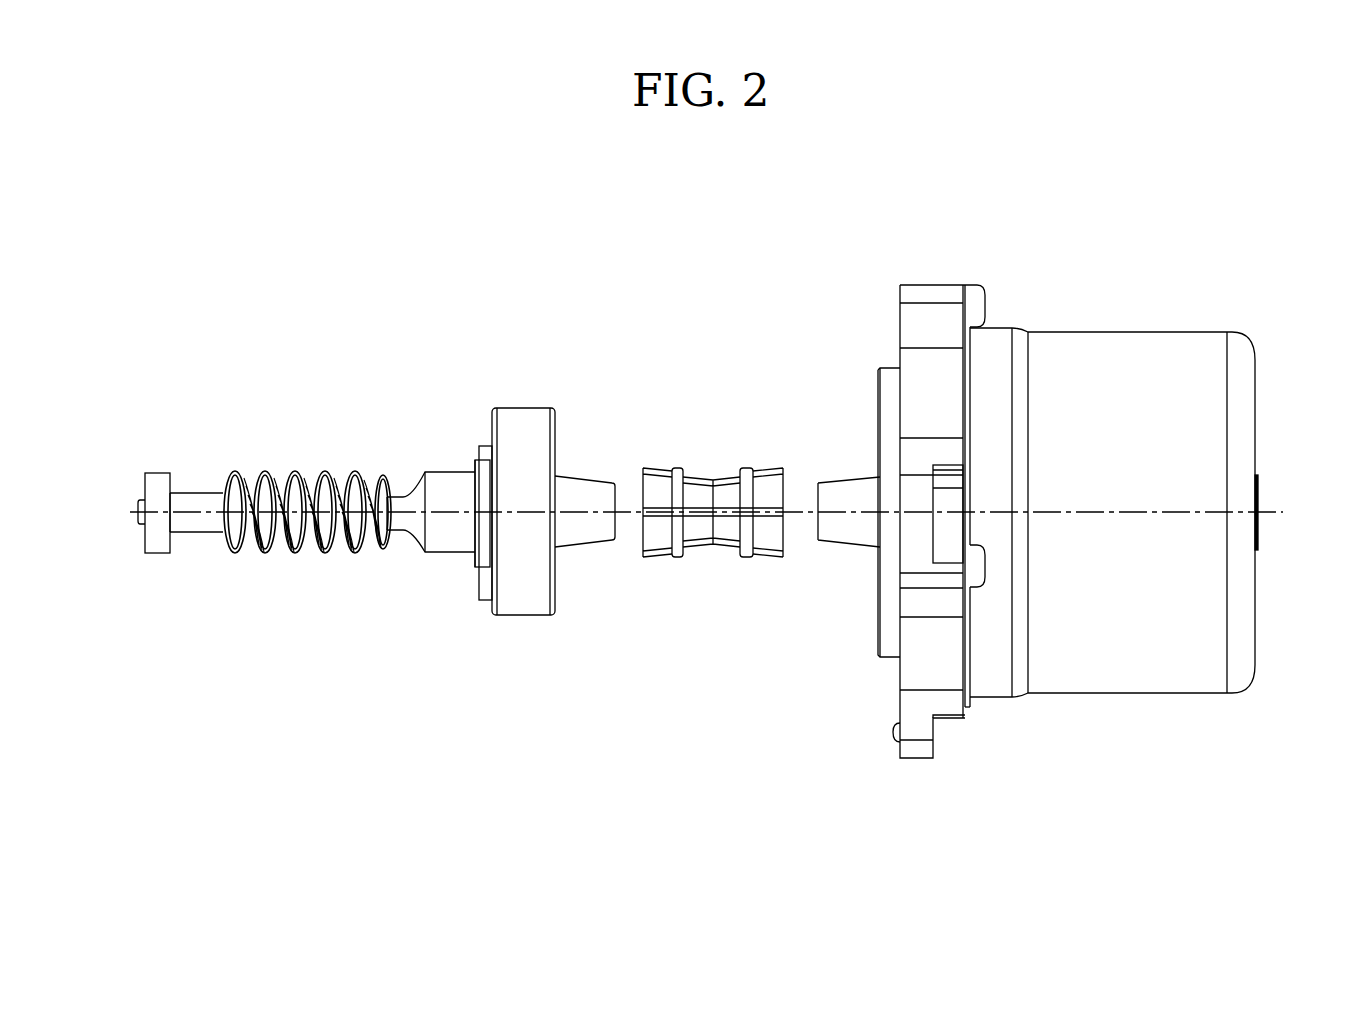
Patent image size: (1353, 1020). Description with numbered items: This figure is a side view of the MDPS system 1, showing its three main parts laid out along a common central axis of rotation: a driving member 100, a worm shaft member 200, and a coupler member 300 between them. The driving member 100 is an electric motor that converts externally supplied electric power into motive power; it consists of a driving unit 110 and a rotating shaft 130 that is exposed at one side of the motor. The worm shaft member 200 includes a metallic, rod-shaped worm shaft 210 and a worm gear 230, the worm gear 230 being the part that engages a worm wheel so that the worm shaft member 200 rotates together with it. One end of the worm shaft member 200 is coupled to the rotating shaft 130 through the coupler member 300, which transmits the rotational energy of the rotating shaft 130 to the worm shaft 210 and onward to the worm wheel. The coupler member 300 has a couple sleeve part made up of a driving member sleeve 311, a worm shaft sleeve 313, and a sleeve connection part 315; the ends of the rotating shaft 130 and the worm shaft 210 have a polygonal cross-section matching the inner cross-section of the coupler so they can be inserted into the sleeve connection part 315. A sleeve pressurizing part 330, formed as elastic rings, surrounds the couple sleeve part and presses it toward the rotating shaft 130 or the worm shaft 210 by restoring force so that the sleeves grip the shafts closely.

The actuator 1 is at (177, 207).
The driving member 100 is at (1072, 266).
The driving unit 110 is at (1172, 383).
The rotating shaft 130 is at (840, 497).
The worm shaft member 200 is at (332, 440).
The worm shaft 210 is at (589, 490).
The worm gear 230 is at (234, 472).
The coupler member 300 is at (746, 352).
The driving member sleeve 311 is at (772, 490).
The worm shaft sleeve 313 is at (657, 490).
The sleeve connection part 315 is at (706, 485).
The sleeve pressurizing part 330 is at (760, 553).